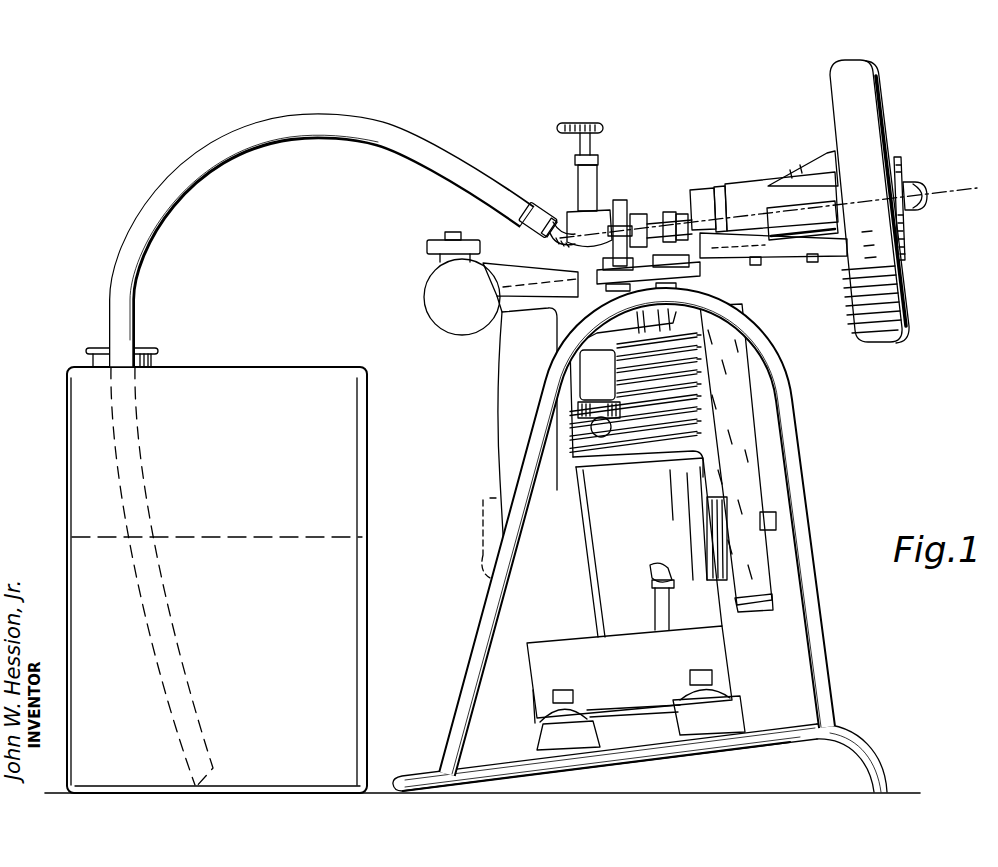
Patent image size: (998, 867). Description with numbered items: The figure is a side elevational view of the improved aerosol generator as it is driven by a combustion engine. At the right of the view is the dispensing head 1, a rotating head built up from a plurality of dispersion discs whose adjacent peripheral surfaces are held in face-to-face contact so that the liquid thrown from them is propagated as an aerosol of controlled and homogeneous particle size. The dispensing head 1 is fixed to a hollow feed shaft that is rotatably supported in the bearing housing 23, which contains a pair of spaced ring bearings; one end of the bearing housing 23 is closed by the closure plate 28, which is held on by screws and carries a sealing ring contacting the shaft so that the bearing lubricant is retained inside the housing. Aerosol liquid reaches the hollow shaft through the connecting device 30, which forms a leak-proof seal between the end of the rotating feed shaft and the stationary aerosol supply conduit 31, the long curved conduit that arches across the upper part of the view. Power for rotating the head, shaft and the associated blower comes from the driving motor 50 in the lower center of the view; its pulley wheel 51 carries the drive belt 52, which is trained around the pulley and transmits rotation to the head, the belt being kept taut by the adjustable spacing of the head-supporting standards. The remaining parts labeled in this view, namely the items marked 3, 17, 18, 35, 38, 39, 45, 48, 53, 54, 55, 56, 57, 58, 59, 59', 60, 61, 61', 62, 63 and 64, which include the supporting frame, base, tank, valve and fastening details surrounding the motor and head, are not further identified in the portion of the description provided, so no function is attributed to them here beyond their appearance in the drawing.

The dispensing head 1 is at (899, 124).
The section line 3- 3 is at (948, 183).
The hub washer 17 is at (912, 237).
The wheel retaining nut 18 is at (929, 206).
The bearing housing 23 is at (757, 186).
The closure plate 28 is at (721, 188).
The connecting device 30 is at (657, 226).
The aerosol supply conduit 31 is at (340, 138).
The nut 35 is at (670, 210).
The valve body 38 is at (580, 207).
The block 39 is at (641, 228).
The wheel face 45 is at (824, 76).
The gusset bracket 48 is at (808, 171).
The driving motor 50 is at (648, 513).
The pulley wheel 51 is at (770, 598).
The drive belt 52 is at (740, 402).
The nut 53 is at (683, 214).
The base foot 54 is at (786, 746).
The rubber mounts 55 is at (678, 722).
The tubular hoop frame 56 is at (519, 453).
The mounting plate 57 is at (745, 262).
The support plate 58 is at (600, 268).
The bolt 59 is at (775, 278).
The bolt 59' is at (821, 276).
The liquid tank 60 is at (255, 372).
The valve 61 is at (607, 174).
The valve handle 61' is at (601, 136).
The bracket bar 62 is at (621, 216).
The elbow 63 is at (560, 246).
The bolt 64 is at (626, 232).